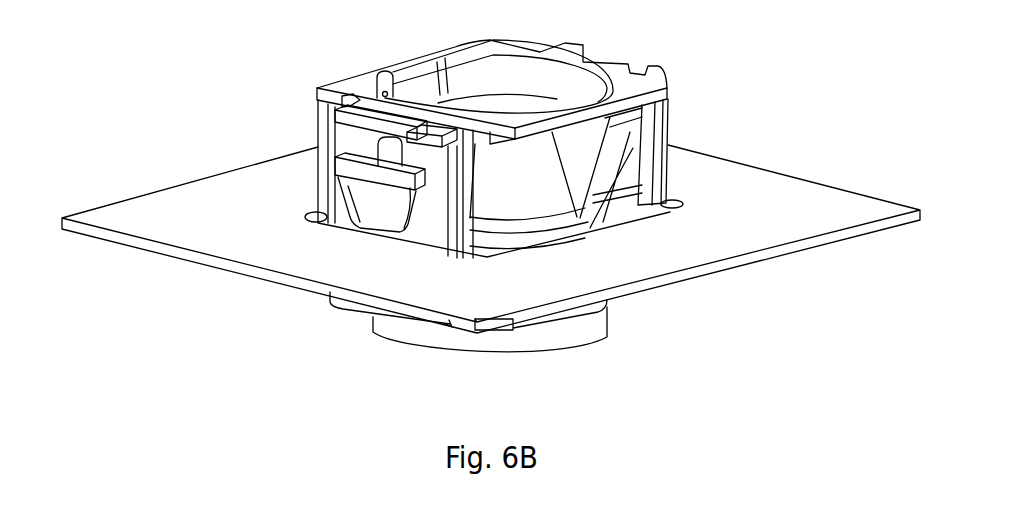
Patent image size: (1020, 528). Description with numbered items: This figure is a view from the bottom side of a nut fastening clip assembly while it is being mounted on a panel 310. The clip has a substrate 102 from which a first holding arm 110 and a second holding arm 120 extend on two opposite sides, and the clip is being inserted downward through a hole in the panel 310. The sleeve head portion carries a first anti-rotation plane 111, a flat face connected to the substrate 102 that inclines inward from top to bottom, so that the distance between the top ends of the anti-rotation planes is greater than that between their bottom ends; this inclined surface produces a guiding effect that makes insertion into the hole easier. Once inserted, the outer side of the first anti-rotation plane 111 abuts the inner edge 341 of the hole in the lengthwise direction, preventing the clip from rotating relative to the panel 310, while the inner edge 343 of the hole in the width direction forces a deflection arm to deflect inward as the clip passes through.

The substrate 102 is at (653, 77).
The first holding arm 110 is at (324, 183).
The first anti-rotation plane 111 is at (578, 163).
The second holding arm 120 is at (667, 142).
The panel 310 is at (796, 178).
The inner edge of the hole in the lengthwise direction 341 is at (577, 241).
The inner edge of the hole in the width direction 343 is at (395, 244).